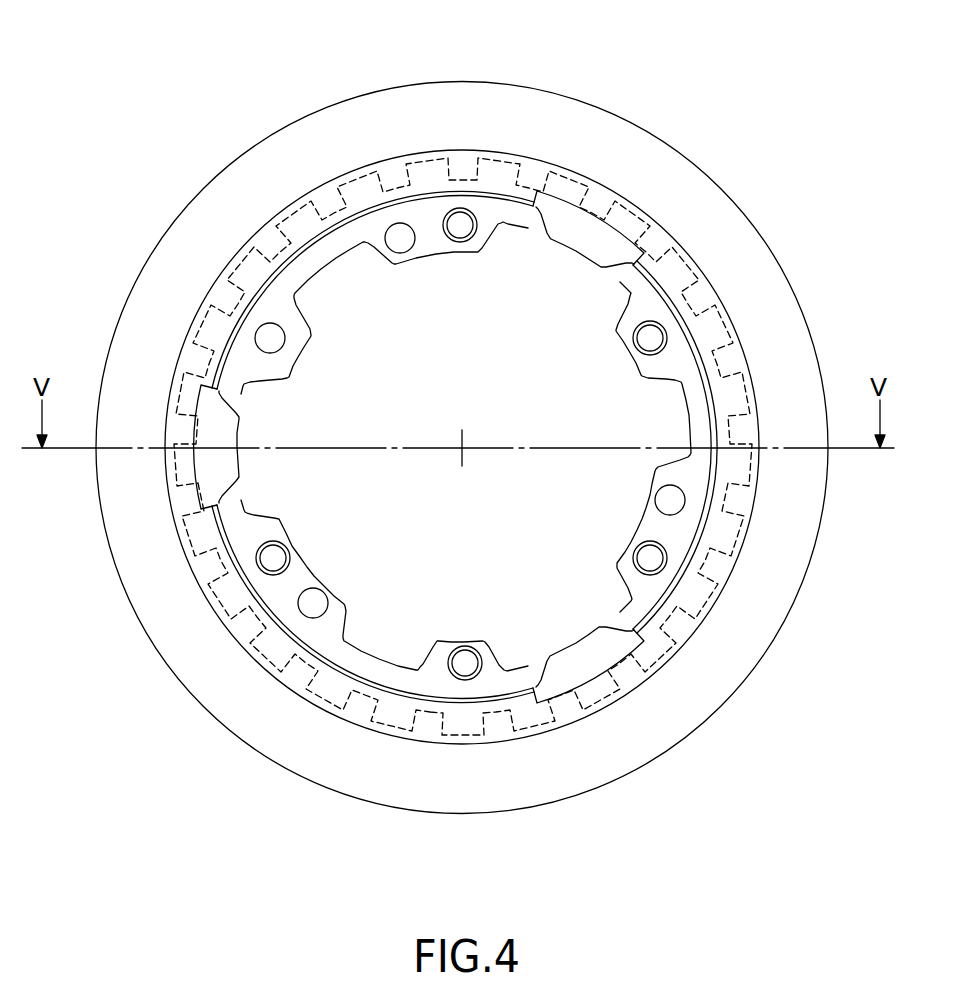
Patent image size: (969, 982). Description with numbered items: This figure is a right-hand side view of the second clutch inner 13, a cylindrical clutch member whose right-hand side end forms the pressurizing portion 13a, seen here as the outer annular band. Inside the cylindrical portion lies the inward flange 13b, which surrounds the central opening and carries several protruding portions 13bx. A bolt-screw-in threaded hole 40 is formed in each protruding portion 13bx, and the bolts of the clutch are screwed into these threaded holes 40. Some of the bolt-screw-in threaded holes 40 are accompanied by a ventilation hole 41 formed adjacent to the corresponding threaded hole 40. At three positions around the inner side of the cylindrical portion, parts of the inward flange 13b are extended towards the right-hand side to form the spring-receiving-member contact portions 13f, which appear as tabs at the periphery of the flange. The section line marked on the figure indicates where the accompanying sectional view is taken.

The second clutch inner 13 is at (180, 120).
The pressurizing portion 13a is at (298, 137).
The inward flange 13b is at (628, 278).
The protruding portions 13bx is at (460, 254).
The spring-receiving-member contact portions 13f is at (587, 243).
The bolt-screw-in threaded holes 40 is at (458, 228).
The ventilation holes 41 is at (400, 236).